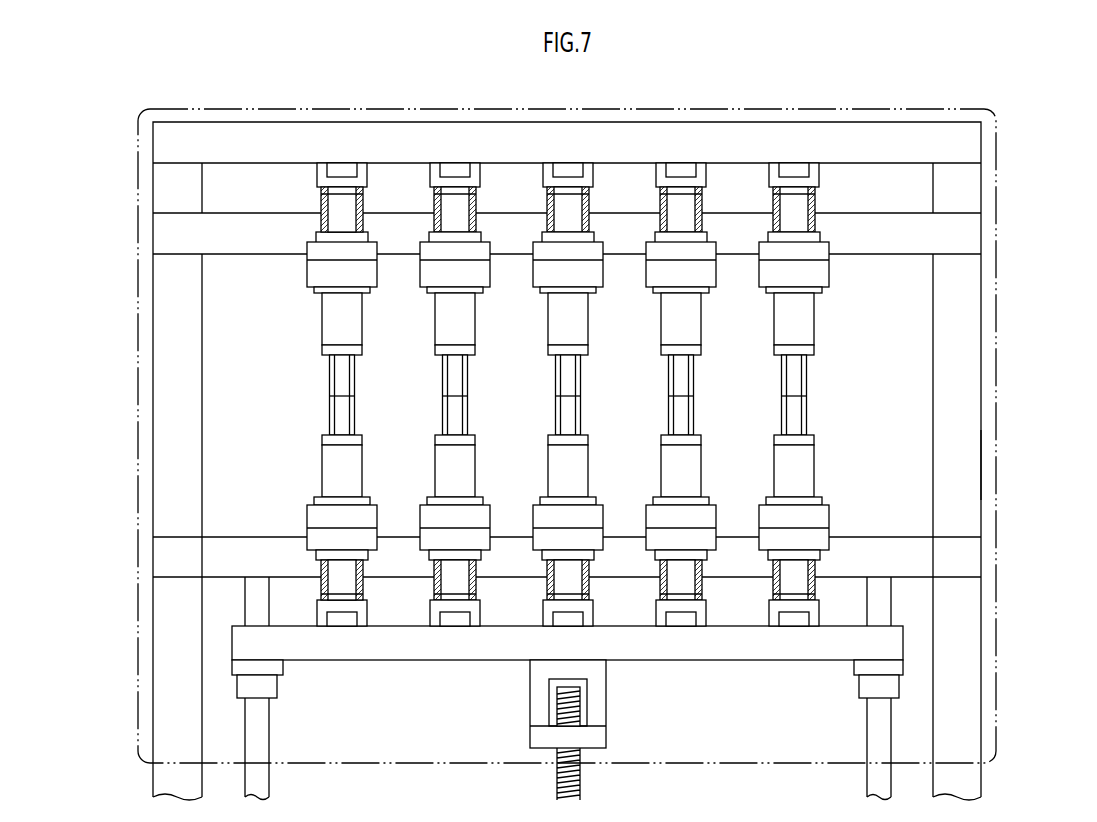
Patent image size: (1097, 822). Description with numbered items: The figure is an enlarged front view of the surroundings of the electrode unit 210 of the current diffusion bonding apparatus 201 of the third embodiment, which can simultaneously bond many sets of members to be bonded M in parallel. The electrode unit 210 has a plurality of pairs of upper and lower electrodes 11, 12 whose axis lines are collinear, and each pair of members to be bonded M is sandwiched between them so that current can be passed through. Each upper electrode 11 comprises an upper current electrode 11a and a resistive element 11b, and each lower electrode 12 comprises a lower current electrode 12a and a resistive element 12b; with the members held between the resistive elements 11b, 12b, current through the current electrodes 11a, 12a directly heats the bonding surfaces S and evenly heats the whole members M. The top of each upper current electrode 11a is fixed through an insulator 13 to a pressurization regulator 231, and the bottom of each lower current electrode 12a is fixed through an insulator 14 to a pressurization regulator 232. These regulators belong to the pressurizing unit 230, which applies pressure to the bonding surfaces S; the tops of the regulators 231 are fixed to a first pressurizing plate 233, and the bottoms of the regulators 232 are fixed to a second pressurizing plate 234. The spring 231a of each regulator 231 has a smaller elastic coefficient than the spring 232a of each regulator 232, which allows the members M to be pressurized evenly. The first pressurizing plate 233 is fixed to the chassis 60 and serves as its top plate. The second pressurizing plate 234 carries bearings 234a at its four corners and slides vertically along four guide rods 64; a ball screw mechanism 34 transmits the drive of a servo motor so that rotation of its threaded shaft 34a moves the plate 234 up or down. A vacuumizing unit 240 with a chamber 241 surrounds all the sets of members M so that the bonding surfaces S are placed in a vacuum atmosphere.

The current diffusion bonding apparatus 201 is at (808, 96).
The pressurization regulator 231 is at (332, 225).
The spring 231a is at (366, 210).
The first pressurizing plate 233 is at (885, 164).
The vacuumizing unit 240 is at (609, 459).
The chamber 241 is at (998, 323).
The insulator 13 is at (313, 292).
The upper electrode 11 is at (301, 327).
The upper current electrode 11a is at (324, 330).
The resistive element 11b is at (320, 348).
The electrode unit 210 is at (319, 394).
The bonding surface S is at (342, 395).
The member to be bonded M is at (798, 406).
The lower electrode 12 is at (301, 455).
The lower current electrode 12a is at (320, 471).
The resistive element 12b is at (324, 438).
The insulator 14 is at (313, 502).
The chassis 60 is at (977, 457).
The pressurization regulator 232 is at (348, 565).
The spring 232a is at (365, 586).
The pressurizing unit 230 is at (479, 688).
The second pressurizing plate 234 is at (567, 662).
The bearing 234a is at (277, 683).
The guide rod 64 is at (270, 733).
The ball screw mechanism 34 is at (603, 730).
The threaded shaft 34a is at (582, 782).